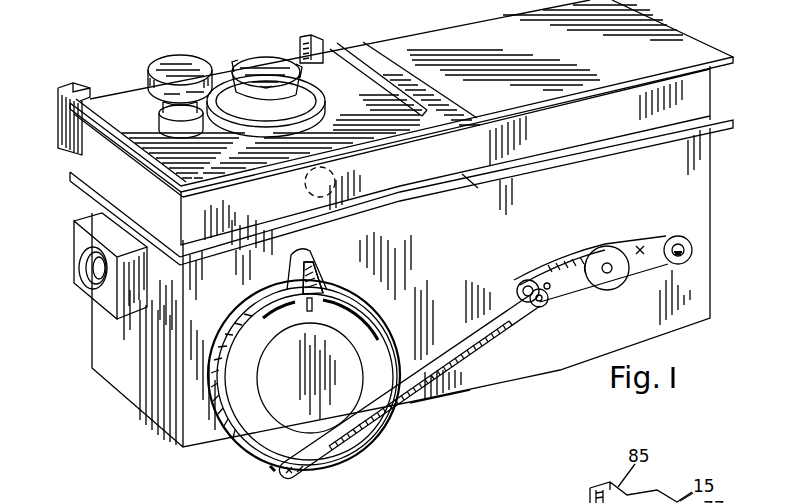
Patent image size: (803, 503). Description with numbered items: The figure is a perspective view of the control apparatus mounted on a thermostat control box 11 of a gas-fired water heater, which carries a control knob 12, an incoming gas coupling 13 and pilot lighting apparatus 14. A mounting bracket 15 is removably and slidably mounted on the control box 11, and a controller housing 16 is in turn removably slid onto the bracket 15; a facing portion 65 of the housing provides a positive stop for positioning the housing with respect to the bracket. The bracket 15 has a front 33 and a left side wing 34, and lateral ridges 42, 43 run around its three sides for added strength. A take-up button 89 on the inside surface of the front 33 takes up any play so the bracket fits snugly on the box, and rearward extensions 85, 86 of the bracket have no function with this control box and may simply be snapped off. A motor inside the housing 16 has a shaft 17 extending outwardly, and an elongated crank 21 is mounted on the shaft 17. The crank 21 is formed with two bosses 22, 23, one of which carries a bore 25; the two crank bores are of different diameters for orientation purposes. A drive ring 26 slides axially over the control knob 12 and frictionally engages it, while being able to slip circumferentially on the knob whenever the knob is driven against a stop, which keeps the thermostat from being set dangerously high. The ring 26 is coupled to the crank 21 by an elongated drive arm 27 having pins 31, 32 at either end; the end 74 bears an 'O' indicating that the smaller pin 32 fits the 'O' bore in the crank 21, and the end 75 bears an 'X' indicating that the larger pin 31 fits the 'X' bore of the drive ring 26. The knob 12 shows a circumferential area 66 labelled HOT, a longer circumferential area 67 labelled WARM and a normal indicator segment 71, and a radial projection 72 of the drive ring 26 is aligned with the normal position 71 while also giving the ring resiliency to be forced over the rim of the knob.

The thermostat control box 11 is at (132, 105).
The control knob 12 is at (250, 440).
The incoming gas coupling 13 is at (93, 290).
The pilot lighting apparatus 14 is at (253, 58).
The mounting bracket 15 is at (375, 58).
The controller housing 16 is at (683, 55).
The shaft 17 is at (609, 264).
The crank 21 is at (612, 288).
The boss 22 is at (503, 280).
The boss 23 is at (688, 242).
The bore 25 is at (686, 254).
The drive ring 26 is at (262, 290).
The drive arm 27 is at (395, 407).
The pin 31 is at (272, 471).
The pin 32 is at (532, 280).
The front 33 is at (370, 190).
The left side wing 34 is at (180, 205).
The lateral ridge 42 is at (120, 136).
The lateral ridge 43 is at (95, 188).
The facing portion 65 is at (437, 397).
The circumferential area 66 is at (245, 308).
The circumferential area 67 is at (358, 312).
The normal indicator segment 71 is at (319, 286).
The radial projection 72 is at (286, 257).
The end 74 is at (530, 310).
The end 75 is at (305, 467).
The rearward extension 85 is at (318, 40).
The rearward extension 86 is at (69, 84).
The take-up button 89 is at (306, 184).